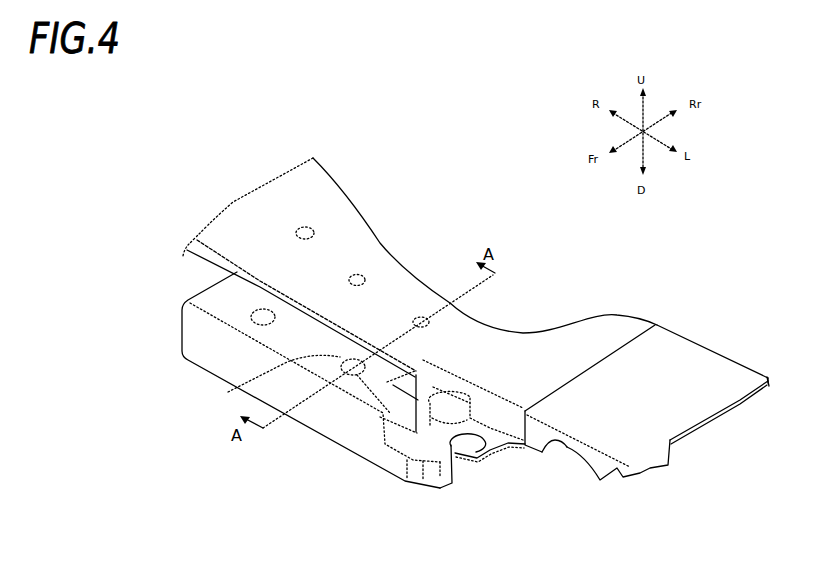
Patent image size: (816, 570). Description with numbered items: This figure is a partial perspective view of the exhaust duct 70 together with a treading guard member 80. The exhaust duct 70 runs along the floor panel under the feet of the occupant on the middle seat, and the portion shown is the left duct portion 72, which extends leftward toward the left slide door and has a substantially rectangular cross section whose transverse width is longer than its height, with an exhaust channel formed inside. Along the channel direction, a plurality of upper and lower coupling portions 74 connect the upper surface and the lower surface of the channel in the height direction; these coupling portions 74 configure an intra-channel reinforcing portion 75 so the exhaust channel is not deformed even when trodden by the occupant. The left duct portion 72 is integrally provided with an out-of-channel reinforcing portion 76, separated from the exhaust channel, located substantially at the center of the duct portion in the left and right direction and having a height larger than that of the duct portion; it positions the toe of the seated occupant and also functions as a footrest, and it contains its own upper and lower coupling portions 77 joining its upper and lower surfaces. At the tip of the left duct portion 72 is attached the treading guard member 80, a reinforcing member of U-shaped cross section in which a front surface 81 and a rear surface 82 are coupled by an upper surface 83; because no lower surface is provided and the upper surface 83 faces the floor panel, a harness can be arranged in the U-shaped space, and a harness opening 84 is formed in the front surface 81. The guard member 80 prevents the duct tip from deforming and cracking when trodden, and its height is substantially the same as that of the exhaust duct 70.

The exhaust duct 70 is at (233, 202).
The left duct portion 72 is at (510, 337).
The upper and lower coupling portion 74 is at (420, 316).
The intra-channel reinforcing portion 75 is at (421, 322).
The out-of-channel reinforcing portion 76 is at (330, 417).
The upper and lower coupling portion 77 is at (253, 320).
The treading guard member 80 is at (690, 340).
The front surface 81 is at (600, 484).
The rear surface 82 is at (770, 380).
The upper surface 83 is at (677, 402).
The harness opening 84 is at (562, 445).